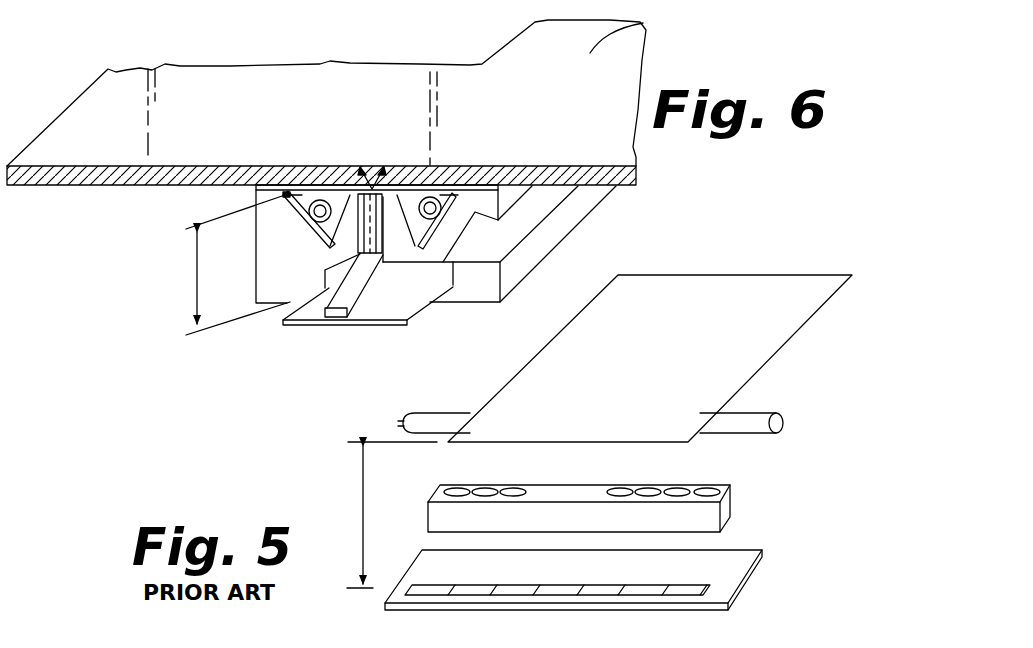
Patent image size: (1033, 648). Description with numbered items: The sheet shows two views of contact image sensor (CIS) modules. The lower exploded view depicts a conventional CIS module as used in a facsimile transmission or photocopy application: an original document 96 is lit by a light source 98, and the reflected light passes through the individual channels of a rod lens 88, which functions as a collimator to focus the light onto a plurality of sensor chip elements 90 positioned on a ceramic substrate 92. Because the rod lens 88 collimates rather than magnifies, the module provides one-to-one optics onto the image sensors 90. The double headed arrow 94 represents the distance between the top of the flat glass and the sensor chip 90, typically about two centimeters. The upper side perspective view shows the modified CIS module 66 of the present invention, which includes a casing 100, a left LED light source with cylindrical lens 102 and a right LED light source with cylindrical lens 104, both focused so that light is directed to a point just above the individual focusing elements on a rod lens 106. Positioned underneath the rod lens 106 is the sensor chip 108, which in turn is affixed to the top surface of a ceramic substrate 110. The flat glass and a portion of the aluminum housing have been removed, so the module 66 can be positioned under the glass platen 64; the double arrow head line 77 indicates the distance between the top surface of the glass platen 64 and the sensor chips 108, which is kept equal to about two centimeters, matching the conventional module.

In FIG. 6, the glass platen 64 is at (643, 23).
In FIG. 6, the module 66 is at (596, 226).
In FIG. 6, the double arrow head line 77 is at (198, 285).
In FIG. 5, the rod lens 88 is at (728, 508).
In FIG. 6, the sensor chip 90 is at (362, 0).
In FIG. 5, the sensor chip 90 is at (688, 587).
In FIG. 6, the ceramic substrate 92 is at (445, 6).
In FIG. 5, the ceramic substrate 92 is at (720, 560).
In FIG. 5, the double headed arrow 94 is at (363, 510).
In FIG. 5, the original document 96 is at (557, 393).
In FIG. 5, the light source 98 is at (413, 418).
In FIG. 6, the casing 100 is at (588, 198).
In FIG. 6, the left LED light source with cylindrical lens 102 is at (325, 198).
In FIG. 6, the right LED light source with cylindrical lens 104 is at (432, 213).
In FIG. 6, the rod lens 106 is at (386, 222).
In FIG. 6, the sensor chip 108 is at (328, 305).
In FIG. 6, the ceramic substrate 110 is at (387, 303).